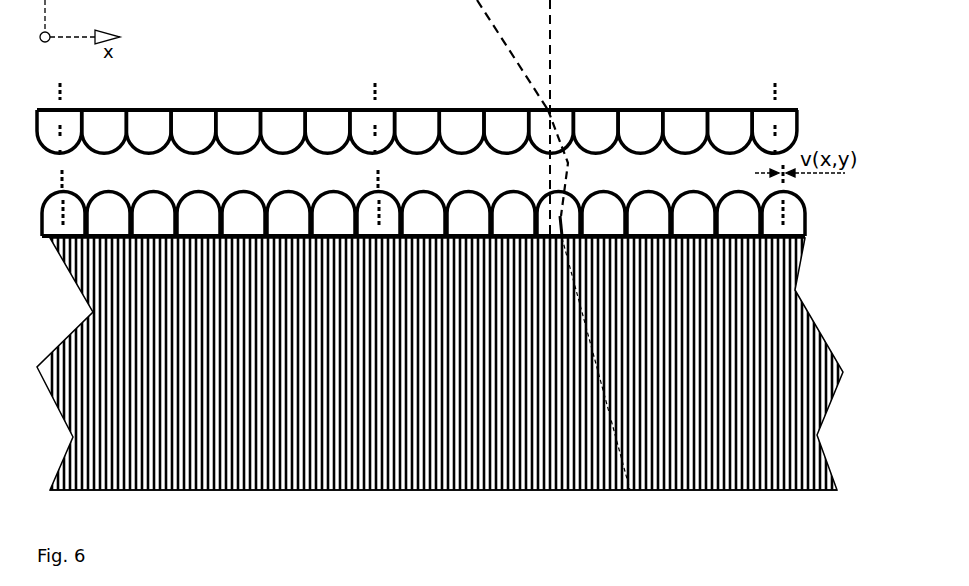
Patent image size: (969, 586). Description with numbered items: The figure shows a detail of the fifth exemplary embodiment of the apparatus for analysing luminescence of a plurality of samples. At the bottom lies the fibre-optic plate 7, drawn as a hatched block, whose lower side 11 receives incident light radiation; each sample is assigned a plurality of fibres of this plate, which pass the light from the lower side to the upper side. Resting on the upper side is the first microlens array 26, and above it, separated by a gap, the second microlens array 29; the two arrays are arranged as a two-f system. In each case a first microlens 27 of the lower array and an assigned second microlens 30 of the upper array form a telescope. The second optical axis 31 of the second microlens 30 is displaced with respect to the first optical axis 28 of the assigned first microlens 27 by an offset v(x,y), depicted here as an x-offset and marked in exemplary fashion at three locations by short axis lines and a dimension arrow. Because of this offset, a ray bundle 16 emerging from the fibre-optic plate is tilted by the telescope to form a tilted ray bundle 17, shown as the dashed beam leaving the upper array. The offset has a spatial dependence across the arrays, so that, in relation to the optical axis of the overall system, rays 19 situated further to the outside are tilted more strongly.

The fibre-optic plate 7 is at (799, 292).
The lower side 11 is at (273, 490).
The ray bundle 16 is at (567, 215).
The tilted ray bundle 17 is at (553, 33).
The light radiation 19 is at (630, 490).
The first microlens array 26 is at (807, 220).
The first microlens 27 is at (373, 197).
The first optical axis 28 is at (66, 183).
The second microlens array 29 is at (800, 112).
The second microlens 30 is at (366, 110).
The second optical axis 31 is at (64, 94).